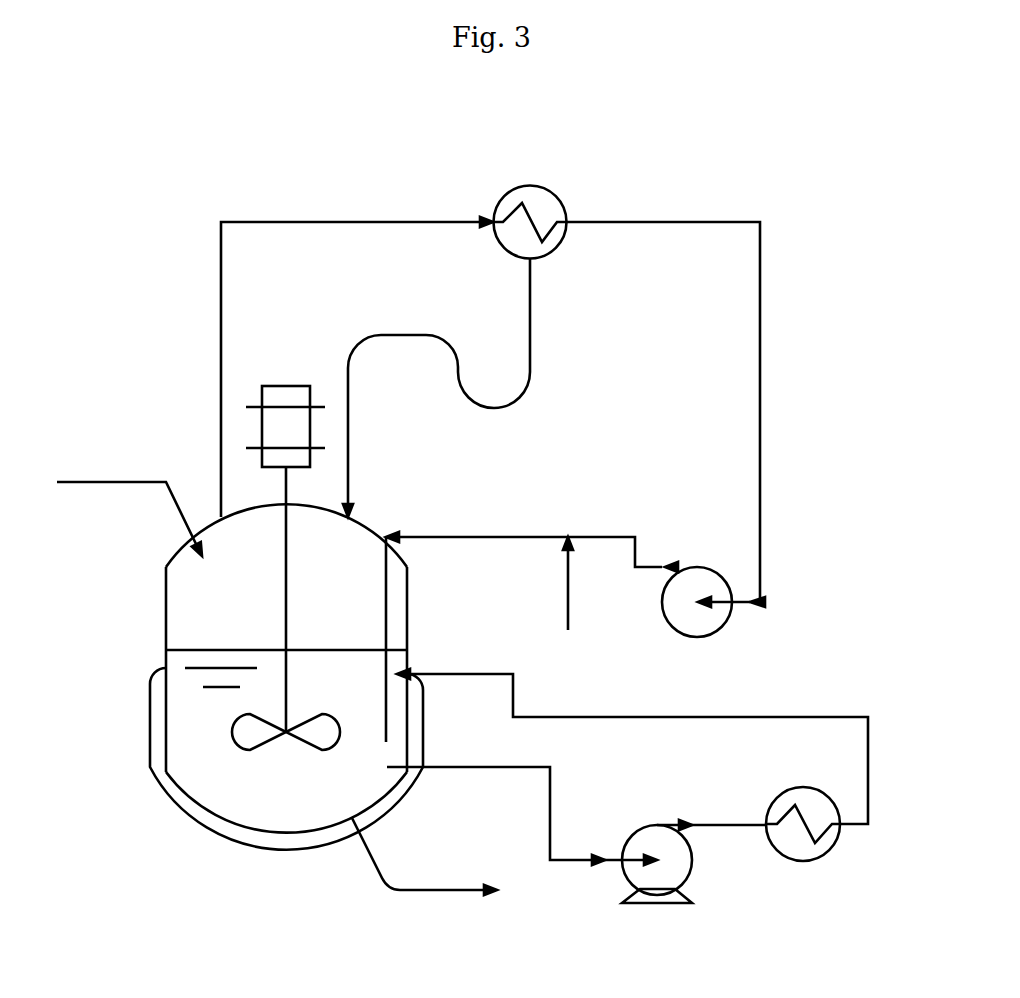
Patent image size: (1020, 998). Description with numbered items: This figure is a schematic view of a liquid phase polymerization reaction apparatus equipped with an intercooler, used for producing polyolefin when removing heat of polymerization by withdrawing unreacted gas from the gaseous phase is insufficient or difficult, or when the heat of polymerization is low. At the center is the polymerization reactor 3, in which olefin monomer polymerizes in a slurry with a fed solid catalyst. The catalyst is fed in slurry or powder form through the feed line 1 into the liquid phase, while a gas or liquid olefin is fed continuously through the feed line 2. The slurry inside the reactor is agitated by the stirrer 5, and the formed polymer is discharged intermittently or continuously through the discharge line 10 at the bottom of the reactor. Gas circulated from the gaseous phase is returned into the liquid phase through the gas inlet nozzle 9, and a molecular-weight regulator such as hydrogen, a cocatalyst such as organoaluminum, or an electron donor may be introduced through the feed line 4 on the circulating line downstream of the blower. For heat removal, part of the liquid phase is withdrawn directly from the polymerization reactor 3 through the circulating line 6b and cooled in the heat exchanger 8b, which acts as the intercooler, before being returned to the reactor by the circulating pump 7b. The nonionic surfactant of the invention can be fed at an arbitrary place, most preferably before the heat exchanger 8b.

The feed line 1 is at (190, 716).
The feed line 2 is at (148, 473).
The polymerization reactor 3 is at (230, 787).
The feed line 4 is at (562, 580).
The stirrer 5 is at (277, 630).
The circulating line 6b is at (765, 712).
The circulating pump 7b is at (657, 917).
The heat exchanger 8b is at (807, 882).
The gas inlet nozzle 9 is at (380, 728).
The discharge line 10 is at (405, 880).